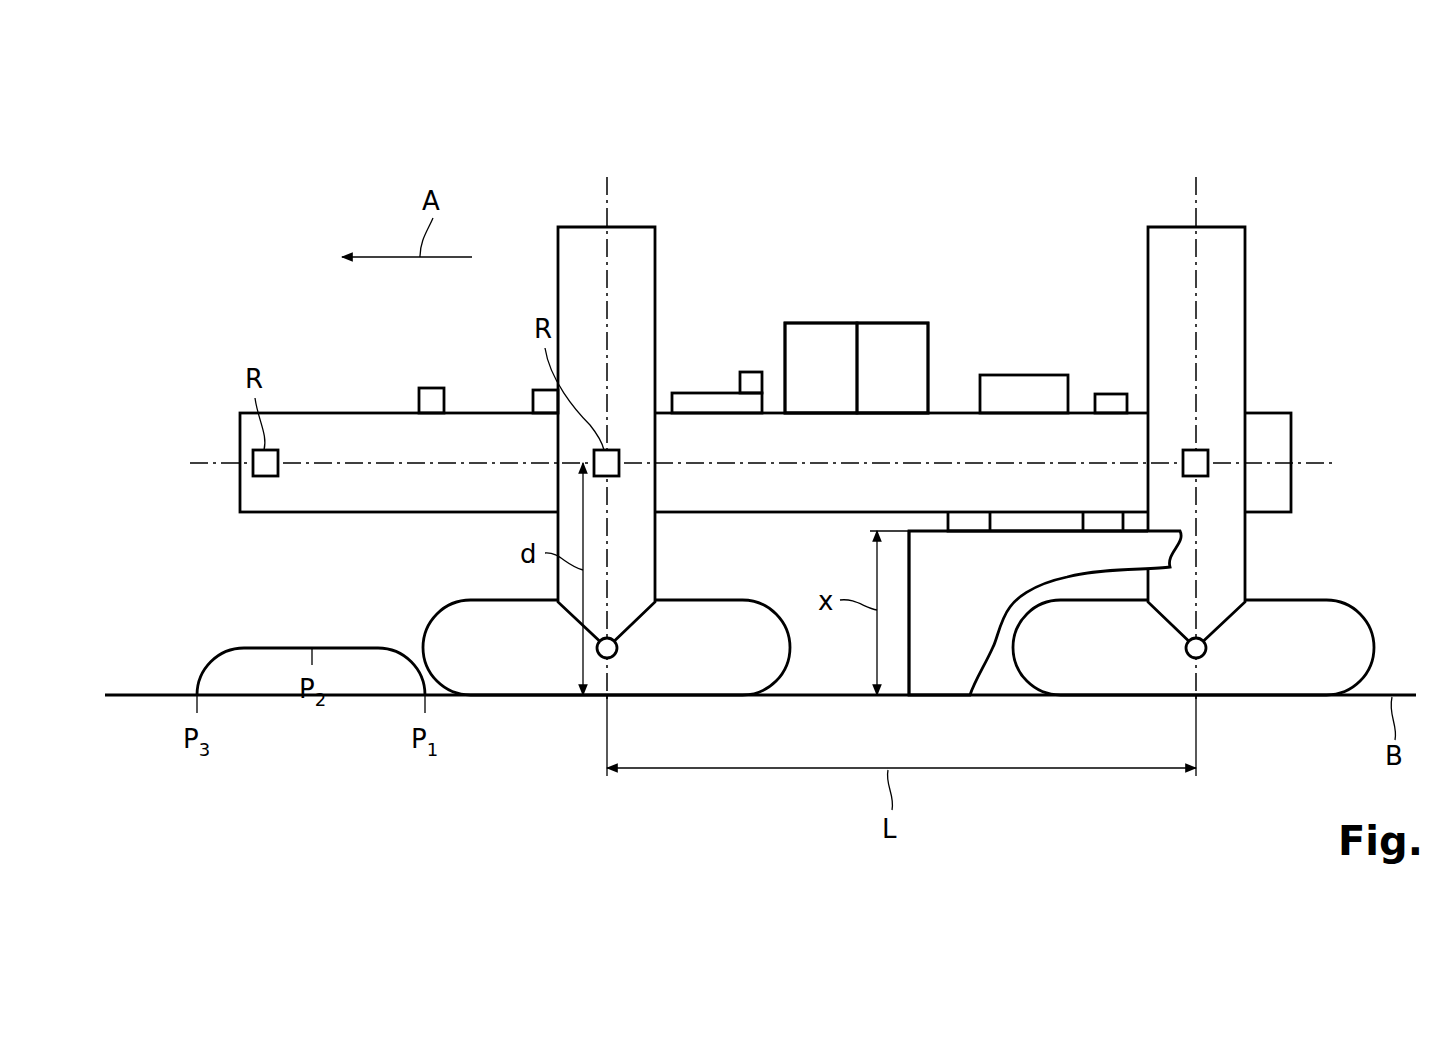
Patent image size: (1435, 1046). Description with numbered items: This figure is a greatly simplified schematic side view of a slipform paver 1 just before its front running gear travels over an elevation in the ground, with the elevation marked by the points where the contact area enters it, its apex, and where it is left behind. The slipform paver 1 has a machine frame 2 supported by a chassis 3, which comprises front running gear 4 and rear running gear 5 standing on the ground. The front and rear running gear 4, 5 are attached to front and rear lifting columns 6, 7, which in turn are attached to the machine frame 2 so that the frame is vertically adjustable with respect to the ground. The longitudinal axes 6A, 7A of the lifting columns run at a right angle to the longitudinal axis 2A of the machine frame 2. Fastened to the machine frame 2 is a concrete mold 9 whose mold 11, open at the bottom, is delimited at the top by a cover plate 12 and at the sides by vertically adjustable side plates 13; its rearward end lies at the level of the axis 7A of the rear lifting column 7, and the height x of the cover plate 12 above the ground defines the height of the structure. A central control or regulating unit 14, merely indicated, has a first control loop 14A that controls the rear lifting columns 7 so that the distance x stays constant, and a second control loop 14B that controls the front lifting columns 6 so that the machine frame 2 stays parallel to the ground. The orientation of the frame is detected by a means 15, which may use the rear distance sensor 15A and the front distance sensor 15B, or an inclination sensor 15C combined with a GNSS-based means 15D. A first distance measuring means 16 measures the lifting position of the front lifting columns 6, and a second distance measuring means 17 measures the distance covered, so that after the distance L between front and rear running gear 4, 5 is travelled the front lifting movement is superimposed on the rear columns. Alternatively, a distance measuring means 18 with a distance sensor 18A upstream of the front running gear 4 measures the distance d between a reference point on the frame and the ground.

The slipform paver 1 is at (1040, 187).
The machine frame 2 is at (948, 378).
The longitudinal axis of the machine frame 2A is at (1332, 463).
The chassis 3 is at (725, 590).
The front running gear 4 is at (790, 648).
The rear running gear 5 is at (1374, 648).
The front lifting column 6 is at (655, 278).
The longitudinal axis of the front lifting column 6A is at (610, 185).
The rear lifting column 7 is at (1245, 278).
The longitudinal axis of the rear lifting column 7A is at (1199, 185).
The concrete mold 9 is at (930, 629).
The mold 11 is at (983, 628).
The cover plate 12 is at (1030, 531).
The side plates 13 is at (963, 680).
The control or regulating unit 14 is at (928, 338).
The first control loop 14A is at (818, 333).
The second control loop 14B is at (893, 333).
The means for determining the orientation of the machine frame 15 is at (1000, 382).
The rear distance sensor 15A is at (1200, 450).
The front distance sensor 15B is at (610, 450).
The inclination sensor 15C is at (712, 400).
The GNSS-based means 15D is at (752, 382).
The first distance measuring means 16 is at (540, 400).
The second distance measuring means 17 is at (1110, 402).
The distance measuring means 18 is at (432, 400).
The distance sensor 18A is at (256, 456).